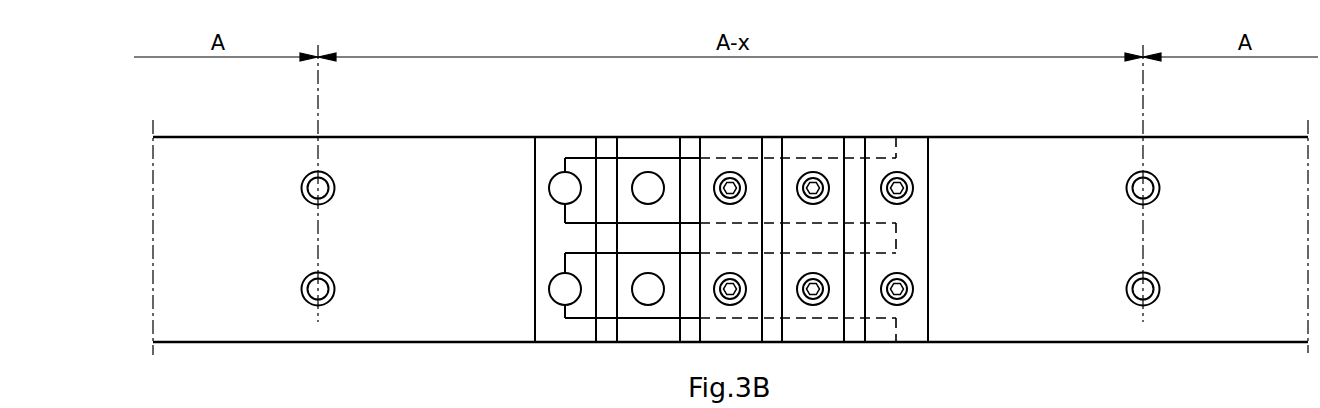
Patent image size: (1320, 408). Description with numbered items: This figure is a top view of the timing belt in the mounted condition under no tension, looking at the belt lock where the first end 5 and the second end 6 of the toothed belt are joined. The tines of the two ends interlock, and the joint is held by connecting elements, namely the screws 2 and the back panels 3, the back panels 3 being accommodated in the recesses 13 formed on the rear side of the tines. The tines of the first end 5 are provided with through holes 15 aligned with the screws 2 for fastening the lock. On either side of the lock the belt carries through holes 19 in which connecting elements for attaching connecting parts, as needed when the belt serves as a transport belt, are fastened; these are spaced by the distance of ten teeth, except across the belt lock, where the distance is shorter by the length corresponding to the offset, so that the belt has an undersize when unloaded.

The screws 2 is at (907, 278).
The back panels 3 is at (885, 148).
The first end 5 is at (1042, 147).
The second end 6 is at (452, 150).
The recesses 13 is at (635, 148).
The through holes 15 is at (560, 287).
The through holes 19 is at (322, 285).